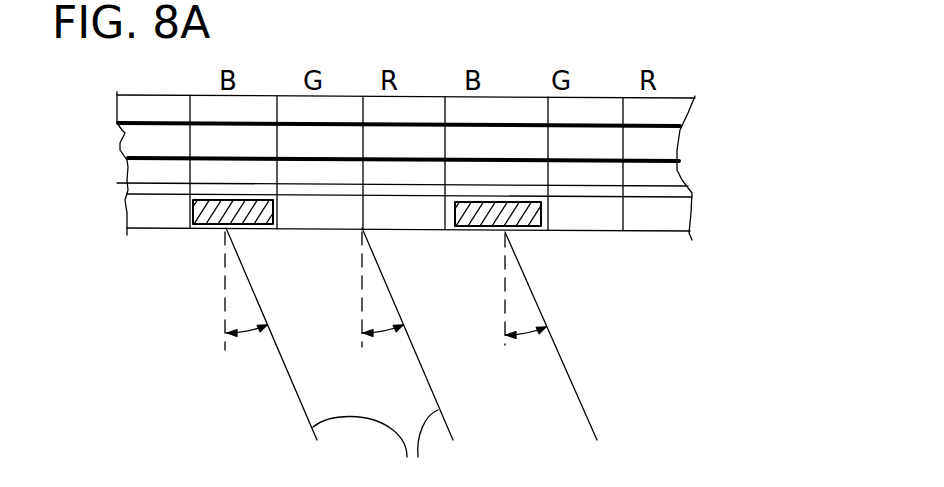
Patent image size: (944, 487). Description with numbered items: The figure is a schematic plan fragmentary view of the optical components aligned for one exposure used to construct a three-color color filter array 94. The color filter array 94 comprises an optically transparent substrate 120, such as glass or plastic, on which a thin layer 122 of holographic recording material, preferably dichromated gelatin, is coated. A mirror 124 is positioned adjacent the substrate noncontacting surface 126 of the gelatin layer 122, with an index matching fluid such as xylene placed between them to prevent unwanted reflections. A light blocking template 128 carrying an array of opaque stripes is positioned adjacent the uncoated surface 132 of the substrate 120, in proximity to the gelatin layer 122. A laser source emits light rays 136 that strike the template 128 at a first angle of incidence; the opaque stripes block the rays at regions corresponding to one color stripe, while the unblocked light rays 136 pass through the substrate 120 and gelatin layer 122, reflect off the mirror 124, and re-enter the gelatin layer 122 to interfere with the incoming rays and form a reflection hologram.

The color filter array 94 is at (87, 177).
The optically transparent substrate 120 is at (680, 178).
The layer of holographic recording material 122 is at (678, 150).
The mirror 124 is at (693, 116).
The substrate noncontacting surface 126 is at (146, 124).
The light blocking template 128 is at (690, 215).
The uncoated surface 132 is at (143, 184).
The light rays 136 is at (585, 417).